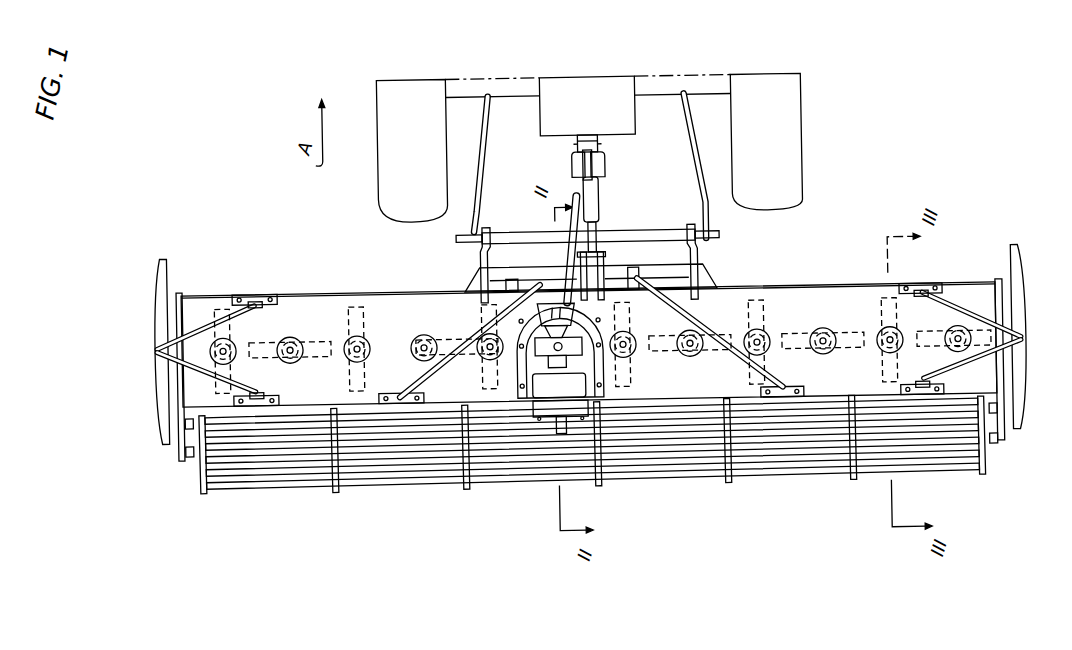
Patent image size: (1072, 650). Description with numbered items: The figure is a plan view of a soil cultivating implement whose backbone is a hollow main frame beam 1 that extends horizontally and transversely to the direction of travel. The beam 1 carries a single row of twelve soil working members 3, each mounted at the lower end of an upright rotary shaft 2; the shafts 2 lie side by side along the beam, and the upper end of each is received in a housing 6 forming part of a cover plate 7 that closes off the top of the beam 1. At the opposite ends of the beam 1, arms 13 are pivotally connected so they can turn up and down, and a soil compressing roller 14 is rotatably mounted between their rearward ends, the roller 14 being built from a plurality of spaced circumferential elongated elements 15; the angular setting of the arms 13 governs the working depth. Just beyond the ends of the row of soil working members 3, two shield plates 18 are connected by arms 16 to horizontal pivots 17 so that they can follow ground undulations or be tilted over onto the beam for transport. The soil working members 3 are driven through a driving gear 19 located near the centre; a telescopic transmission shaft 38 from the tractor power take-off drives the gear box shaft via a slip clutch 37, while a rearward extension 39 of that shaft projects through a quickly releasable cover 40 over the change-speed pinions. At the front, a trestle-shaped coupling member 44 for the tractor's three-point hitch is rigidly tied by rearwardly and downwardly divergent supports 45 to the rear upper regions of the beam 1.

The hollow main frame beam 1 is at (374, 287).
The upright rotary shaft 2 is at (349, 340).
The soil working member 3 is at (313, 356).
The housing 6 is at (817, 333).
The cover plate 7 is at (834, 297).
The arm 13 is at (177, 448).
The roller 14 is at (797, 484).
The elongated element 15 is at (662, 457).
The arm 16 is at (213, 334).
The pivot 17 is at (919, 308).
The shield plate 18 is at (155, 325).
The driving gear 19 is at (595, 383).
The slip clutch 37 is at (526, 346).
The telescopic transmission shaft 38 is at (574, 232).
The rearward extension 39 is at (560, 433).
The cover 40 is at (545, 418).
The trestle-shaped coupling member 44 is at (703, 257).
The support 45 is at (473, 333).